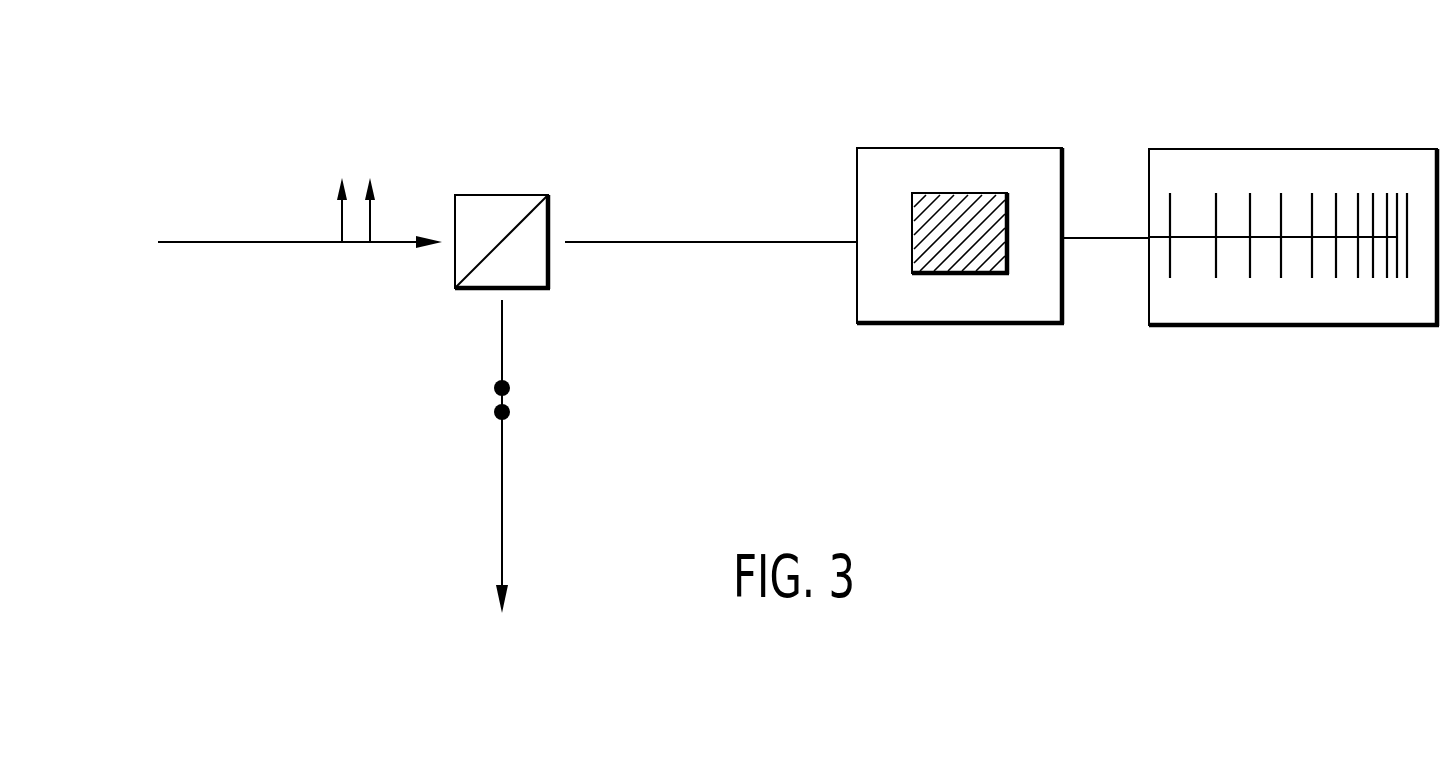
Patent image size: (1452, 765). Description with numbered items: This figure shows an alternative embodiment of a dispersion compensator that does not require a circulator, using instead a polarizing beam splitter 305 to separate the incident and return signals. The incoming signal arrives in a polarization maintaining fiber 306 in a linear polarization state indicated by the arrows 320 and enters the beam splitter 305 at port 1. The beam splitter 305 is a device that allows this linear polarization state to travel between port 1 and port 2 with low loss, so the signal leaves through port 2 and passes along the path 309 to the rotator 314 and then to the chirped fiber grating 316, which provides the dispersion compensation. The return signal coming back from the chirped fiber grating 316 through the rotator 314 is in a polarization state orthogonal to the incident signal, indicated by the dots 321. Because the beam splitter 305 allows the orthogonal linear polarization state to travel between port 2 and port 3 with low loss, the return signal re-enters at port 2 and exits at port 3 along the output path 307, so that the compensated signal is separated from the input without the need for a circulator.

The polarization maintaining fiber 306 is at (234, 242).
The arrows (linear polarization state) 320 is at (356, 182).
The polarizing beam splitter 305 is at (500, 193).
The first output optical path 309 is at (707, 243).
The rotator 314 is at (960, 148).
The chirped fiber grating 316 is at (1307, 149).
The second output optical path 307 is at (501, 486).
The dots (orthogonal linear polarization state) 321 is at (515, 417).
The port 1 is at (409, 217).
The port 2 is at (711, 217).
The port 3 is at (488, 340).